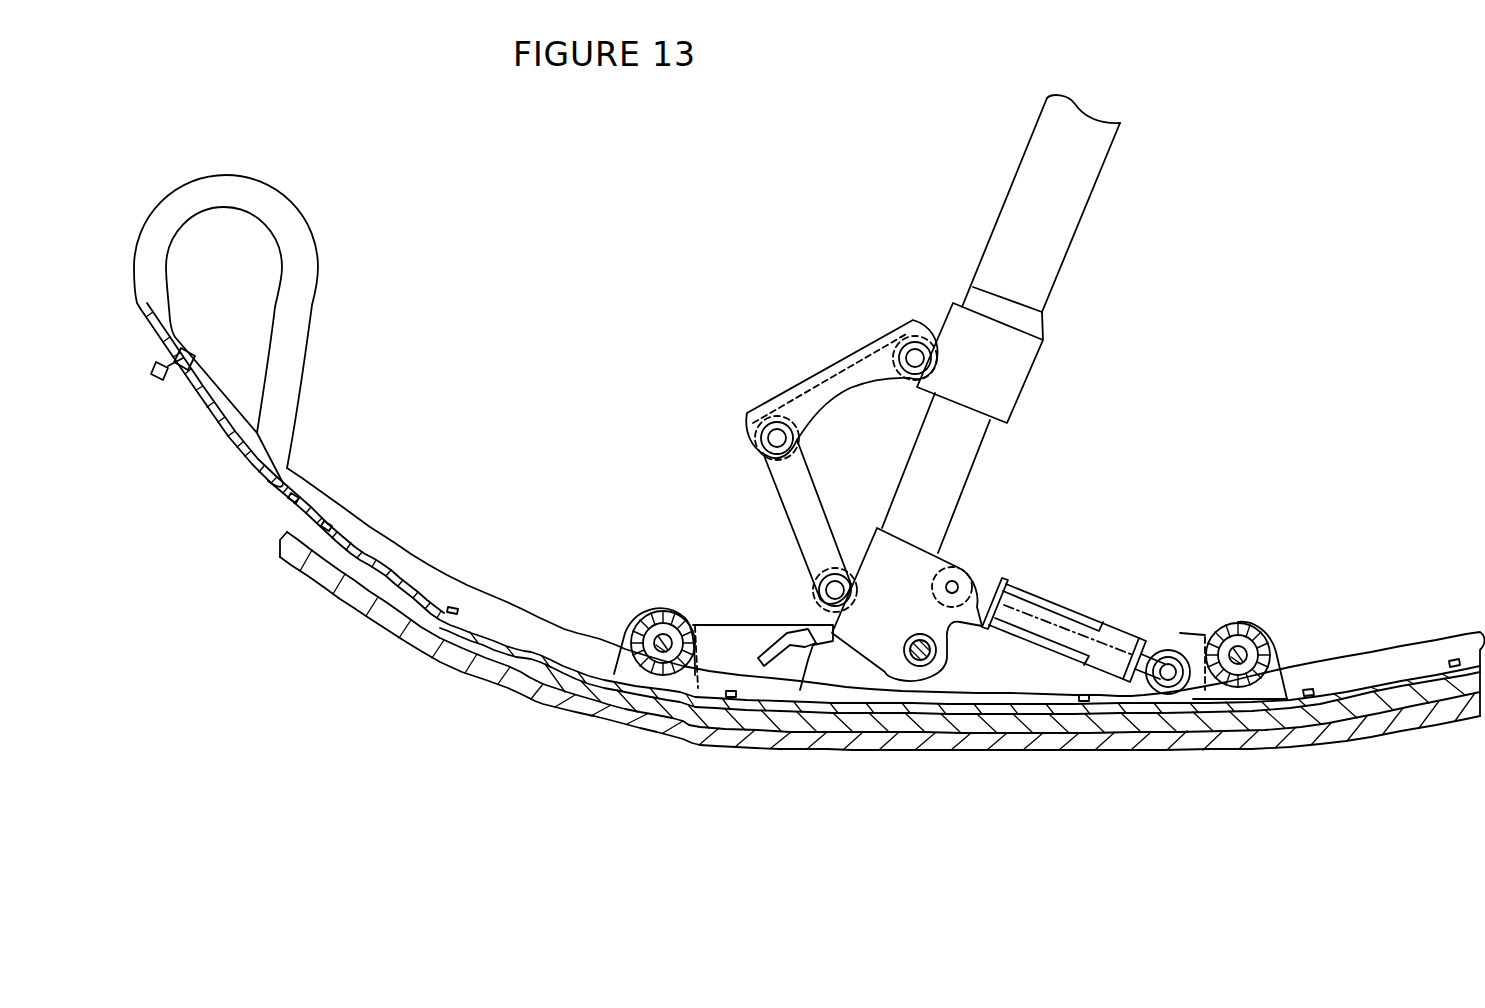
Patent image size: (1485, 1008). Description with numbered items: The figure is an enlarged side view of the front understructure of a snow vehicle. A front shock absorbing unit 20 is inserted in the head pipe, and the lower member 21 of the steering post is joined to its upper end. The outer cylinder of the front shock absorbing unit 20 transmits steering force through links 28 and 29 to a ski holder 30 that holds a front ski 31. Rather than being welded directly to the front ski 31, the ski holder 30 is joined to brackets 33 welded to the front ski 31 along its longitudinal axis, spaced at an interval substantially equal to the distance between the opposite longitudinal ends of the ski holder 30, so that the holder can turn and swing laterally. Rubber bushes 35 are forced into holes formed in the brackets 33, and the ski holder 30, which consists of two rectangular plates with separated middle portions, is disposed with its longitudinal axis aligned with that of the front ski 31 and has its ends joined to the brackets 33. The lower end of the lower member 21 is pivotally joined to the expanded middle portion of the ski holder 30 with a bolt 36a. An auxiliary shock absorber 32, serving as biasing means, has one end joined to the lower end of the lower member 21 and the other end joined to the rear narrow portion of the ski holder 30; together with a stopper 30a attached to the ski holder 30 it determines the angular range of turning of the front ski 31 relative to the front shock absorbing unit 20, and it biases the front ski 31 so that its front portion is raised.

The front shock absorbing unit 20 is at (955, 521).
The lower member of steering post 21 is at (1032, 133).
The link 28 is at (823, 368).
The link 29 is at (770, 480).
The ski holder 30 is at (757, 625).
The stopper 30a is at (808, 650).
The front ski 31 is at (378, 628).
The auxiliary shock absorber 32 is at (1083, 620).
The bracket 33 is at (625, 628).
The rubber bush 35 is at (663, 630).
The bolt 36a is at (922, 667).